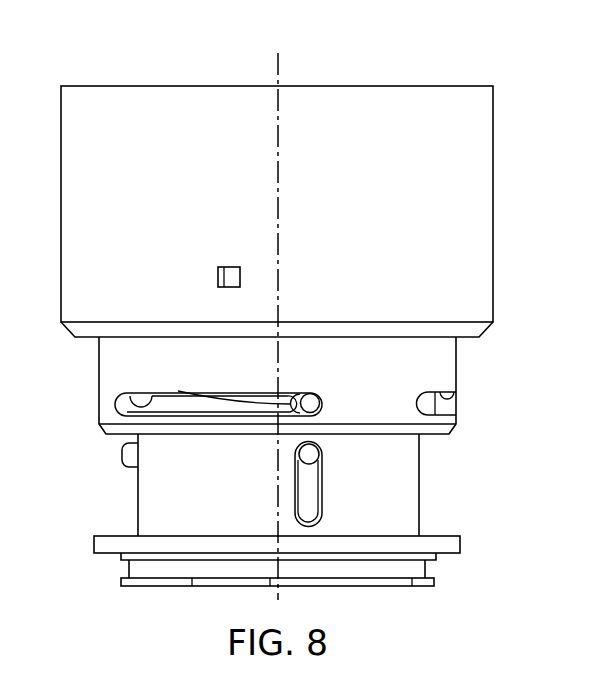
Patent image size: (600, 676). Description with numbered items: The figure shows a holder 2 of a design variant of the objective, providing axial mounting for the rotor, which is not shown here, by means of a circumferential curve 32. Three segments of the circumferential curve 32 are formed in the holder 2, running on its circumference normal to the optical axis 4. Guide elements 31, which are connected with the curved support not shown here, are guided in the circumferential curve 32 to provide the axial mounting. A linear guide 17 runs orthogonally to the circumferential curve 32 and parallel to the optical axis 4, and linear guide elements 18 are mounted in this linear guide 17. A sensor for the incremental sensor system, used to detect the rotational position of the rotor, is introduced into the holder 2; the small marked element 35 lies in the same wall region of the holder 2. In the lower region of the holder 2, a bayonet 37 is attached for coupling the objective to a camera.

The holder 2 is at (472, 196).
The optical axis 4 is at (278, 135).
The linear guide 17 is at (305, 510).
The linear guide elements 18 is at (128, 455).
The guide elements 31 is at (310, 396).
The circumferential curve 32 is at (117, 403).
The marker 35 is at (231, 267).
The bayonet 37 is at (405, 571).